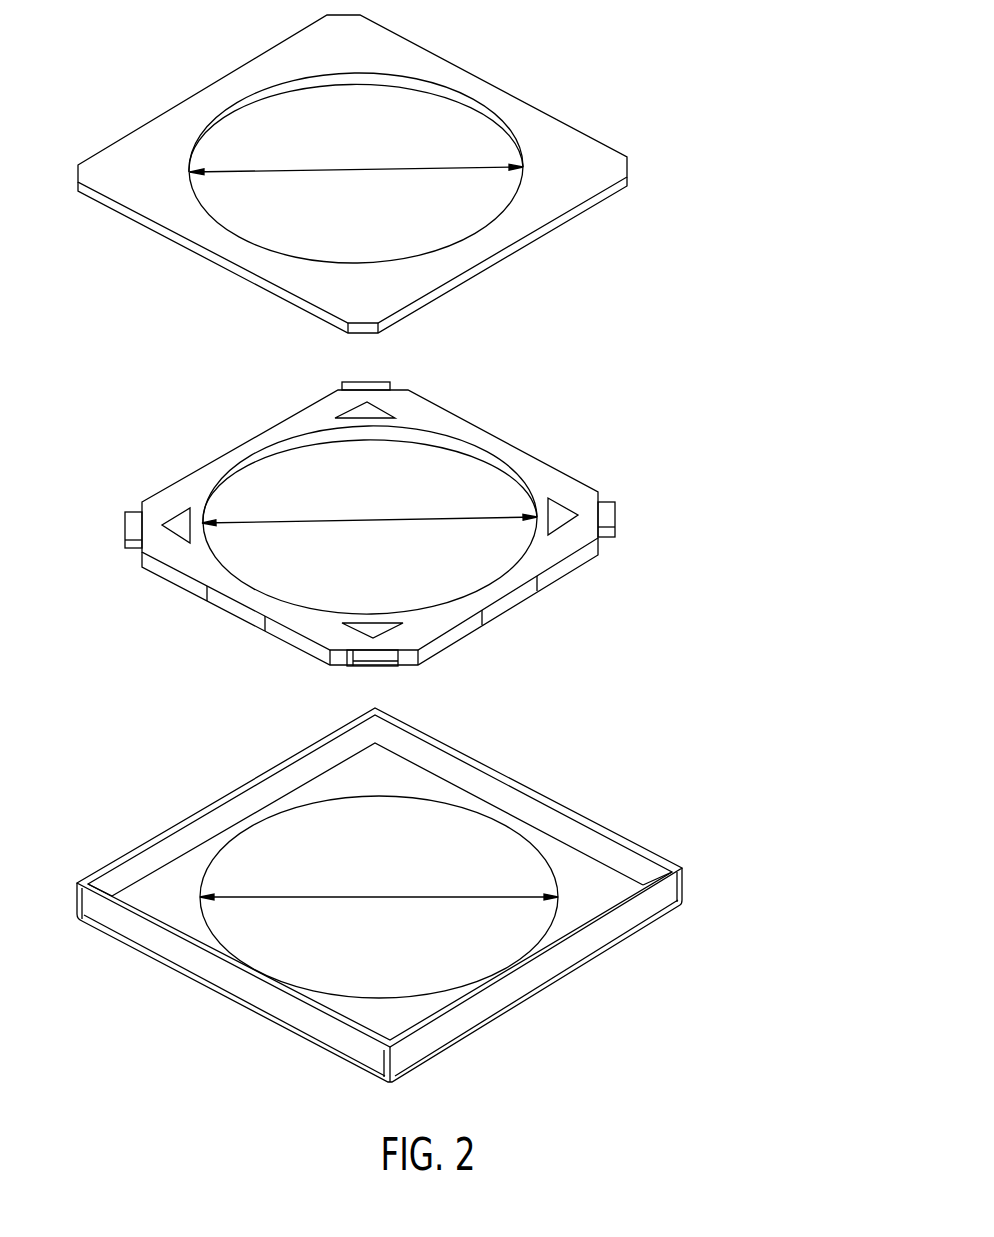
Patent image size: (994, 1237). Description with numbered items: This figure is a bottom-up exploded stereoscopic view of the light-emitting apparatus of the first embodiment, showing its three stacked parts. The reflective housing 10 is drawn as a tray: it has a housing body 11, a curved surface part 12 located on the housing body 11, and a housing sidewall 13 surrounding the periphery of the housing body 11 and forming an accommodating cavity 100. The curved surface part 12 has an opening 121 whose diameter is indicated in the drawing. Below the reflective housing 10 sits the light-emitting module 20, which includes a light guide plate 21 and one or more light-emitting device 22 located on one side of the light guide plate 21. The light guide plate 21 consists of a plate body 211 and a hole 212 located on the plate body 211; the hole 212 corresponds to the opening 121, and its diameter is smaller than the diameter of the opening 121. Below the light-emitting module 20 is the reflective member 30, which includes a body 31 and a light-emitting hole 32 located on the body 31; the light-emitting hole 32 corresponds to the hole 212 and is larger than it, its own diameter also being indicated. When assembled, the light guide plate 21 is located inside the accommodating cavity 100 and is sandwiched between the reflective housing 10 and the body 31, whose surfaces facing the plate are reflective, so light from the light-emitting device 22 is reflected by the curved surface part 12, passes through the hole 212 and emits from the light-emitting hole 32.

The reflective housing 10 is at (400, 893).
The housing body 11 is at (167, 900).
The curved surface part 12 is at (346, 851).
The opening 121 is at (317, 832).
The housing sidewall 13 is at (188, 837).
The accommodating cavity 100 is at (622, 863).
The light-emitting module 20 is at (482, 512).
The light guide plate 21 is at (435, 512).
The plate body 211 is at (528, 468).
The hole 212 is at (437, 465).
The light-emitting device 22 is at (608, 515).
The reflective member 30 is at (415, 174).
The body 31 is at (570, 127).
The light-emitting hole 32 is at (455, 138).